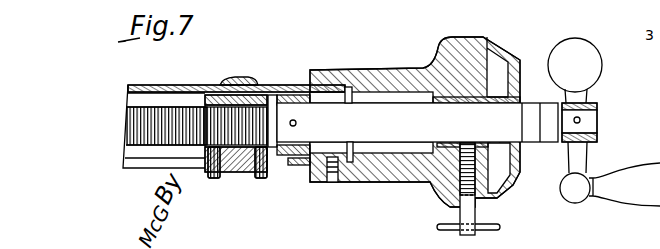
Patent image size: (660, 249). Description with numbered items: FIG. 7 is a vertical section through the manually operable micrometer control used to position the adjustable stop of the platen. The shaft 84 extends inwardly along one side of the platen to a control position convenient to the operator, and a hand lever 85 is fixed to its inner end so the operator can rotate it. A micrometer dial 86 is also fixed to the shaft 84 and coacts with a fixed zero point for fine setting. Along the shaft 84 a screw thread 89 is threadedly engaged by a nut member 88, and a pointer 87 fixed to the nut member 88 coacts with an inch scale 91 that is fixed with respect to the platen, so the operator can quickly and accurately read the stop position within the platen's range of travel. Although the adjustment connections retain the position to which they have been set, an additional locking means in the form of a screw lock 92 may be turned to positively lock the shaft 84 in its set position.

The shaft 84 is at (373, 130).
The hand lever 85 is at (572, 190).
The micrometer dial 86 is at (490, 52).
The pointer 87 is at (243, 77).
The nut member 88 is at (233, 173).
The screw thread 89 is at (133, 123).
The inch scale 91 is at (168, 84).
The screw lock 92 is at (440, 219).